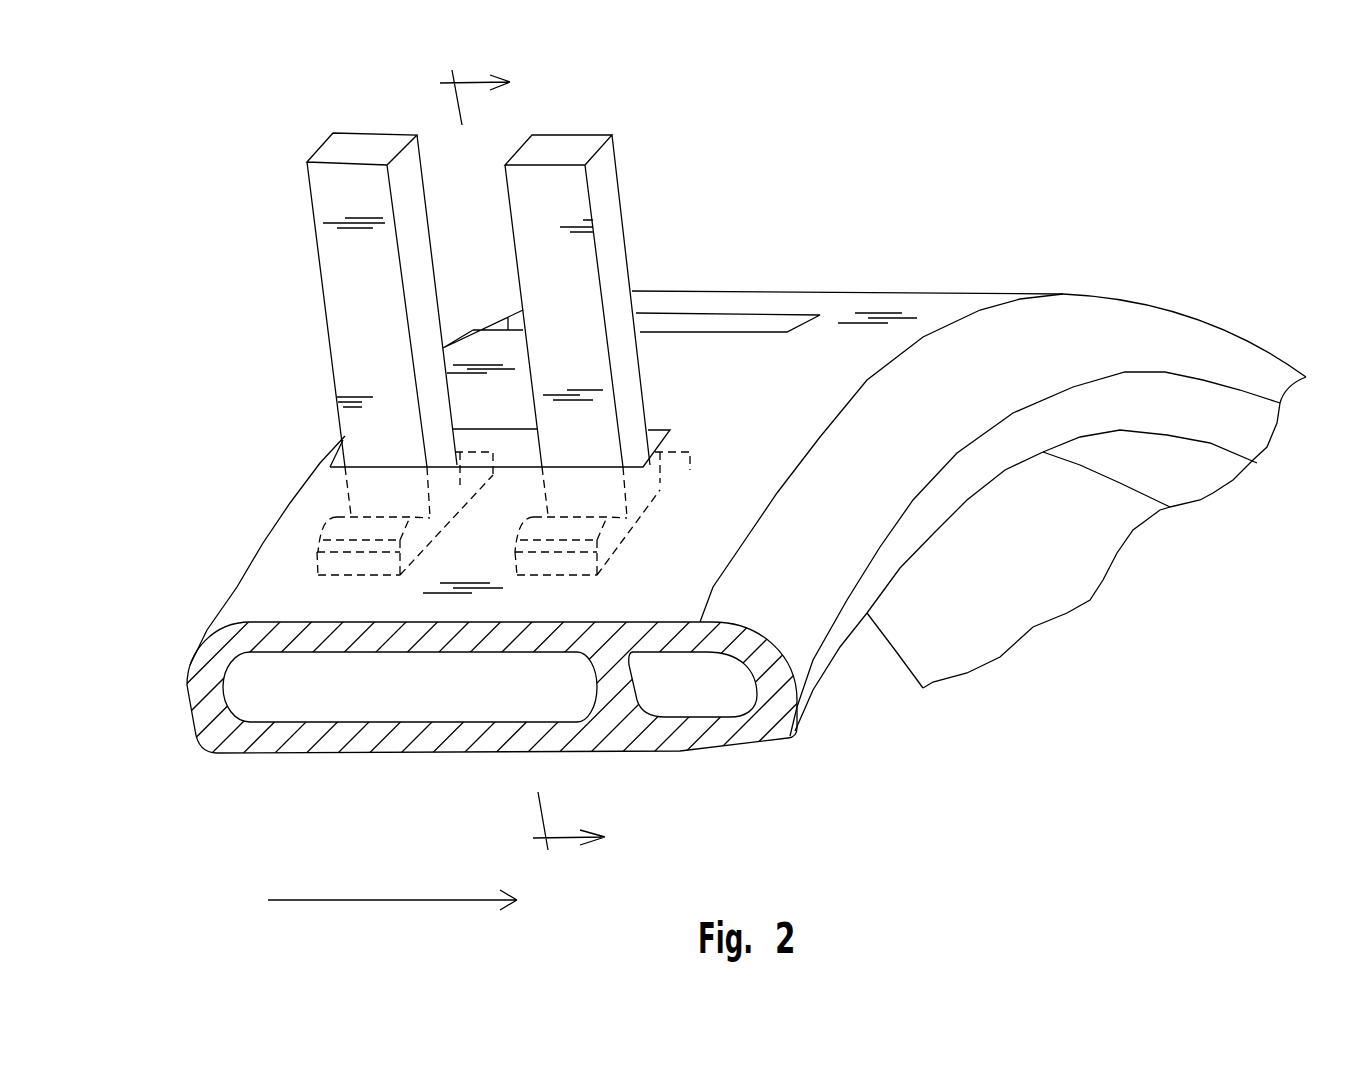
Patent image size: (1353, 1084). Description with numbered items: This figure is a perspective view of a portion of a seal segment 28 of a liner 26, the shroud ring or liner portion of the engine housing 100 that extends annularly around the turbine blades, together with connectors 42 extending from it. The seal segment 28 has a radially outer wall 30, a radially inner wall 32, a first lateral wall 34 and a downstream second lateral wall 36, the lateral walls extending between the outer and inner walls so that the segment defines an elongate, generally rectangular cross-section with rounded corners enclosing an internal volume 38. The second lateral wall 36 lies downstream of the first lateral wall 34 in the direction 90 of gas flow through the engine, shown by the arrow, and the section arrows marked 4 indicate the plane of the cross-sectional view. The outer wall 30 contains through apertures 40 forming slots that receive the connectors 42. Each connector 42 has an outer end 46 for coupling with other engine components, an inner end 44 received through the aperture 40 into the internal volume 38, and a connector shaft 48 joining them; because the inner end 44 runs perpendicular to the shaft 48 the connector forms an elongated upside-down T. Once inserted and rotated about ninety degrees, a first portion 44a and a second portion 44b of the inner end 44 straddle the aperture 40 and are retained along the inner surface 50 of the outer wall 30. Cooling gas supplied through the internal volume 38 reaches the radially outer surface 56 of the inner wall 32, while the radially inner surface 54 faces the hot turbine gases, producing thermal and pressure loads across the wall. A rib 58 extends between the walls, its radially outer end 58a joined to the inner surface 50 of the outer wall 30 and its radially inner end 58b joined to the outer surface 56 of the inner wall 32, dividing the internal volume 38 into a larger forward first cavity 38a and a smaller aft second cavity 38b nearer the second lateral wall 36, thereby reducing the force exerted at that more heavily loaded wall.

The housing 100 is at (803, 178).
The liner 26 is at (848, 292).
The seal segment 28 is at (682, 254).
The radially outer wall 30 is at (923, 307).
The radially inner wall 32 is at (1188, 468).
The first lateral wall 34 is at (200, 690).
The second lateral wall 36 is at (793, 613).
The internal volume 38 is at (381, 704).
The first cavity 38a is at (313, 708).
The second cavity 38b is at (696, 712).
The through apertures 40 is at (650, 430).
The connector 42 is at (545, 282).
The inner end 44 is at (640, 497).
The first portion 44a is at (590, 530).
The second portion 44b is at (687, 453).
The outer end 46 is at (562, 148).
The connector shaft 48 is at (347, 333).
The inner surface 50 is at (458, 657).
The radially inner surface 54 is at (748, 750).
The radially outer surface 56 is at (793, 730).
The rib 58 is at (607, 687).
The radially outer end 58a is at (610, 657).
The radially inner end 58b is at (632, 715).
The direction of gas flow 90 is at (388, 900).
The section line 4 is at (526, 463).